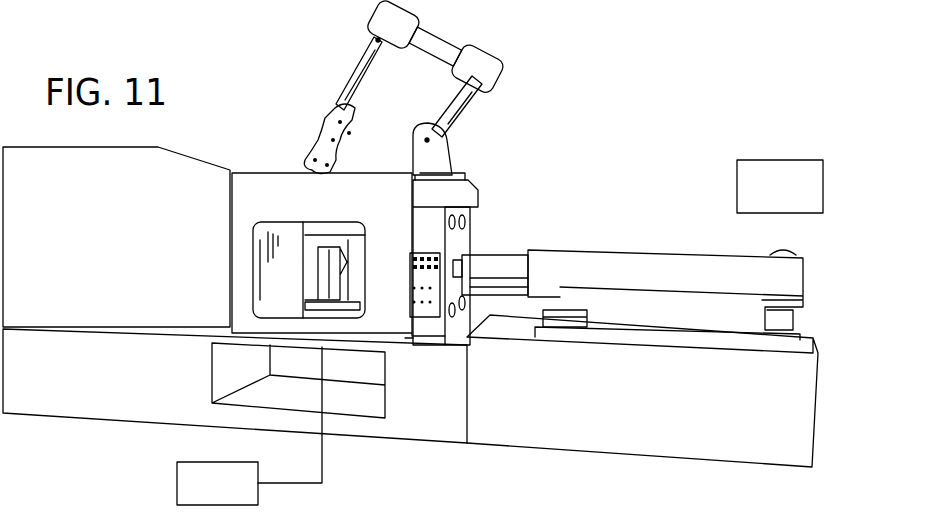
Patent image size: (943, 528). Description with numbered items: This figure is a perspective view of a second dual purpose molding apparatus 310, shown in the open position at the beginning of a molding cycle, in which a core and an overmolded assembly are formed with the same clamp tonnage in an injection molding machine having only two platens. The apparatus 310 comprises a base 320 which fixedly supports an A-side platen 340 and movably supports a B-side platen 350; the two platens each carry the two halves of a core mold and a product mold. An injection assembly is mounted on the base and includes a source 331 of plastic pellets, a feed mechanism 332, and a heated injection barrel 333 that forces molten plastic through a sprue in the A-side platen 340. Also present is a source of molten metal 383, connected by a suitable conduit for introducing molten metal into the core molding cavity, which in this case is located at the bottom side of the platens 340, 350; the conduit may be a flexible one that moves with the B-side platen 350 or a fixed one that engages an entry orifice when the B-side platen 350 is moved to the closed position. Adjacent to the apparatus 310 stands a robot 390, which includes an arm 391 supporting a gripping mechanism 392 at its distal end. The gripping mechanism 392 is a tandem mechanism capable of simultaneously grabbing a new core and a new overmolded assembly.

The dual purpose molding apparatus 310 is at (676, 157).
The base 320 is at (120, 388).
The source of plastic pellets 331 is at (783, 246).
The feed mechanism 332 is at (668, 263).
The heated injection barrel 333 is at (500, 267).
The A-side platen 340 is at (427, 222).
The B-side platen 350 is at (272, 228).
The source of molten metal 383 is at (249, 426).
The robot 390 is at (522, 110).
The arm 391 is at (367, 78).
The gripping mechanism 392 is at (322, 135).